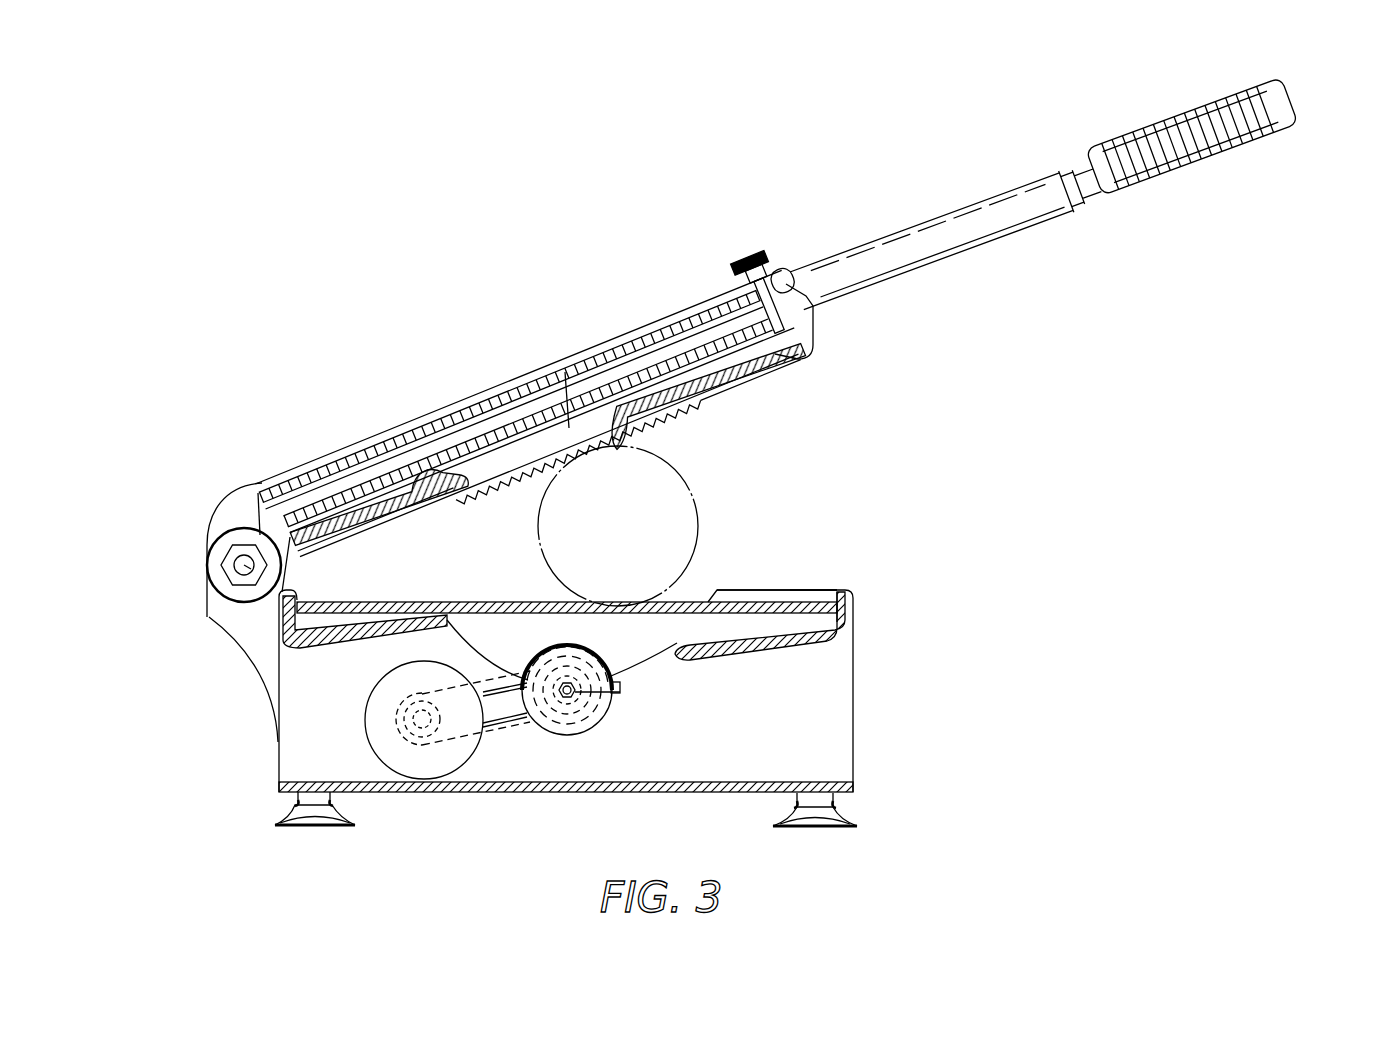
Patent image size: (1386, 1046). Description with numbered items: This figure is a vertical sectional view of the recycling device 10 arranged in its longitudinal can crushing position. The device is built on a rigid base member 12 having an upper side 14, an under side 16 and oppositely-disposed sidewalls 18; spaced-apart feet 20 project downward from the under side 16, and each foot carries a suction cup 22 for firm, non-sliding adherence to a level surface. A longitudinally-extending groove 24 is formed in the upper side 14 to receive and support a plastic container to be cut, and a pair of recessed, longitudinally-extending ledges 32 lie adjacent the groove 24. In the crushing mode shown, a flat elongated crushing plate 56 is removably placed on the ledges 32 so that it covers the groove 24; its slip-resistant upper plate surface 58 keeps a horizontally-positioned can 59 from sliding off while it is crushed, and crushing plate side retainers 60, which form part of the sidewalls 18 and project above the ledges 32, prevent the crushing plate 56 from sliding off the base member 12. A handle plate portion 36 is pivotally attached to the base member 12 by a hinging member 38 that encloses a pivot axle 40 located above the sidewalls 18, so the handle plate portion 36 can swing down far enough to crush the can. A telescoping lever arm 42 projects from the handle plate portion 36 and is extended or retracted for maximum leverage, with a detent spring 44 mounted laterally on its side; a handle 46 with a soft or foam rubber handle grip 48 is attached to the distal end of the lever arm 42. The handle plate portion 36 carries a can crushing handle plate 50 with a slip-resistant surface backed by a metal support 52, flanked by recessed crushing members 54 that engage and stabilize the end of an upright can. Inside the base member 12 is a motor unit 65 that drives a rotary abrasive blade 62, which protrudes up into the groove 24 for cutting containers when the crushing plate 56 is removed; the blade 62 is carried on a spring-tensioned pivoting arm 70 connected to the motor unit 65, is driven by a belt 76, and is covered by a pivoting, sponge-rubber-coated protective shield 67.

The recycling device 10 is at (760, 439).
The base member 12 is at (543, 708).
The upper side 14 is at (851, 590).
The under side 16 is at (647, 810).
The sidewalls 18 is at (277, 738).
The feet 20 is at (833, 803).
The suction cup 22 is at (812, 828).
The longitudinally-extending groove 24 is at (655, 645).
The ledges 32 is at (358, 614).
The handle plate portion 36 is at (768, 384).
The hinging member 38 is at (230, 623).
The pivot axle 40 is at (242, 568).
The telescoping lever arm 42 is at (921, 233).
The detent spring 44 is at (768, 255).
The handle 46 is at (1188, 97).
The handle grip 48 is at (532, 371).
The can crushing handle plate 50 is at (522, 484).
The metal backing support 52 is at (523, 421).
The crushing members 54 is at (721, 382).
The crushing plate 56 is at (737, 564).
The upper plate surface 58 is at (537, 602).
The can 59 is at (699, 522).
The crushing plate side retainers 60 is at (803, 590).
The blade 62 is at (600, 714).
The motor unit 65 is at (366, 740).
The protective shield 67 is at (621, 688).
The pivoting arm 70 is at (527, 728).
The belt 76 is at (512, 727).